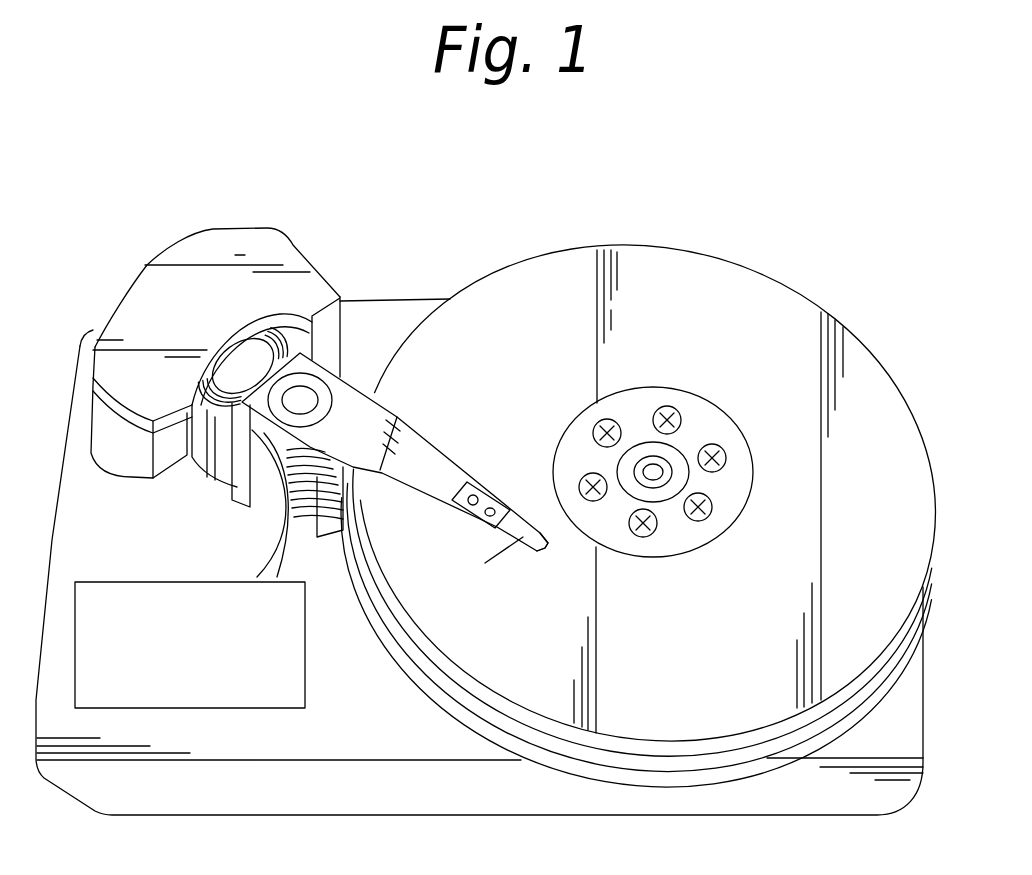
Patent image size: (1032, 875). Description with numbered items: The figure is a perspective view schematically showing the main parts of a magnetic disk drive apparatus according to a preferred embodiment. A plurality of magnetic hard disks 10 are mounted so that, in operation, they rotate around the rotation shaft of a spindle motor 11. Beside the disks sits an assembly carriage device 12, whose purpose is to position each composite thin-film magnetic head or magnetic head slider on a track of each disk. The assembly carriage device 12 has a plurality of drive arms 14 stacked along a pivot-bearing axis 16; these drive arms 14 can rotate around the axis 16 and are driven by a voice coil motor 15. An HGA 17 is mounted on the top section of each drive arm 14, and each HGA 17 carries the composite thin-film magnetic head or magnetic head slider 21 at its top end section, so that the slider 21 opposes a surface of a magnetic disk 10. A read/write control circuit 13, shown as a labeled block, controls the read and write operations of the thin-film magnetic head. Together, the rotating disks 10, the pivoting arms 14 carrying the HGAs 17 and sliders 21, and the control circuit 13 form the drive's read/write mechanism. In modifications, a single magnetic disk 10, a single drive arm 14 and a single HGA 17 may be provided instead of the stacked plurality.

The magnetic hard disk 10 is at (823, 299).
The spindle motor 11 is at (664, 470).
The assembly carriage device 12 is at (240, 250).
The read/write control circuit 13 is at (202, 708).
The drive arm 14 is at (397, 417).
The voice coil motor 15 is at (191, 460).
The pivot-bearing axis 16 is at (307, 403).
The HGA 17 is at (477, 512).
The magnetic head slider 21 is at (547, 547).